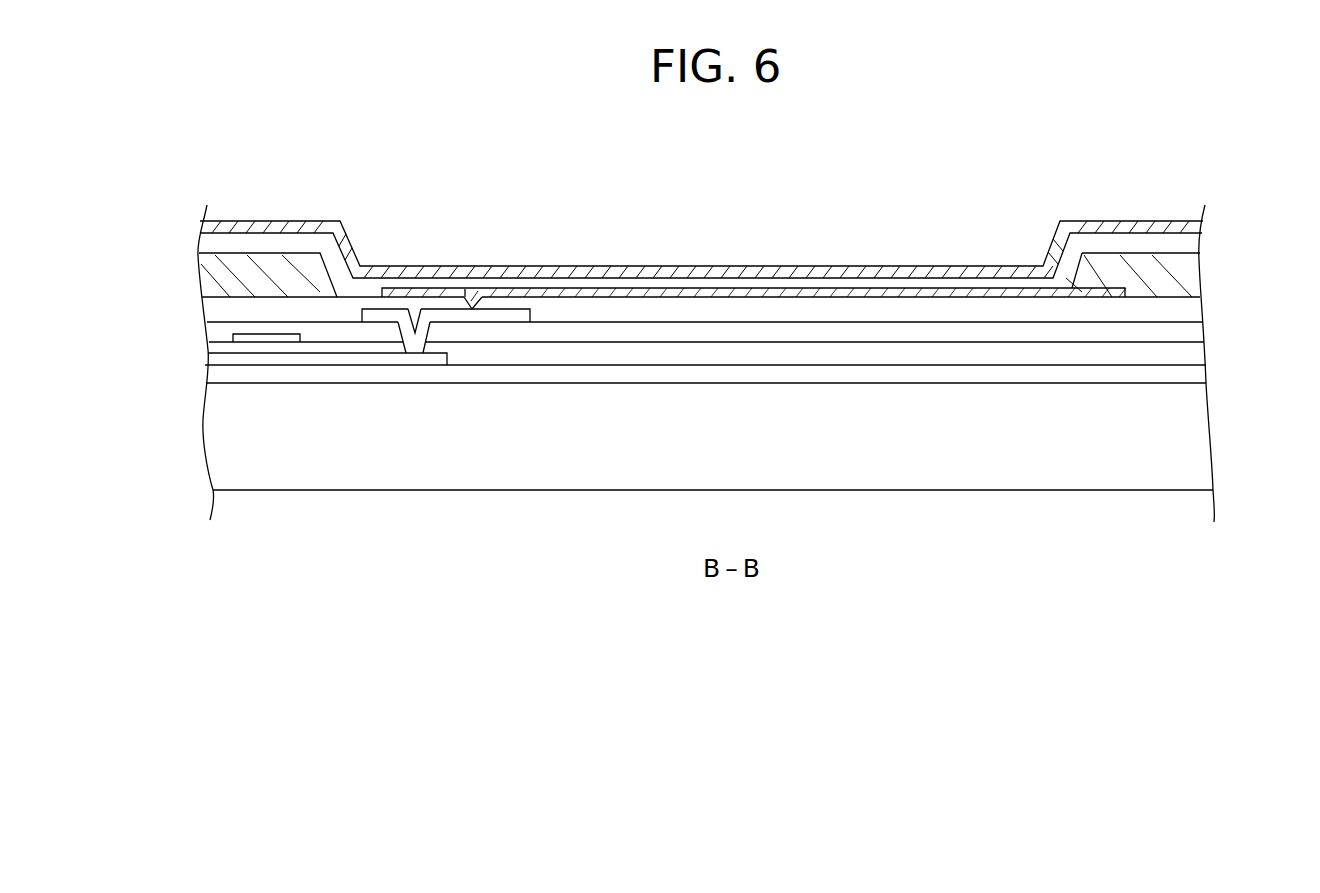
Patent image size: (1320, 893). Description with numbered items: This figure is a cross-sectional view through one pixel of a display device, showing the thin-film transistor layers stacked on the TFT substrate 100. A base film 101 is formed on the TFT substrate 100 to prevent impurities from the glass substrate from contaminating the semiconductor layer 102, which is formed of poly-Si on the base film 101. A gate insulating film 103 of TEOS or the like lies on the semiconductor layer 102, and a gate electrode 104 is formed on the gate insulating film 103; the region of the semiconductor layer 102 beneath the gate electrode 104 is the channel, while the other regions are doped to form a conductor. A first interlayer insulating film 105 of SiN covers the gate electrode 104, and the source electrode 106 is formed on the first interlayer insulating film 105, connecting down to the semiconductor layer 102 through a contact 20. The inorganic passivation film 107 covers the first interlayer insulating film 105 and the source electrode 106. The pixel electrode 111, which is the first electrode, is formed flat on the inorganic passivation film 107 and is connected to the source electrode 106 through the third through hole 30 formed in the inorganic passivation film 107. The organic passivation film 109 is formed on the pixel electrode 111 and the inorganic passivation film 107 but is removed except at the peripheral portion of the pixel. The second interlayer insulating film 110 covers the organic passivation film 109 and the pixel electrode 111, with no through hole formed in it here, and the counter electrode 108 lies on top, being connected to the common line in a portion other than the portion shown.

The contact hole 20 is at (413, 312).
The third through hole 30 is at (476, 300).
The TFT substrate 100 is at (1187, 443).
The base film 101 is at (1187, 377).
The semiconductor layer 102 is at (337, 361).
The gate insulating film 103 is at (1187, 355).
The gate electrode 104 is at (261, 338).
The first interlayer insulating film 105 is at (1187, 330).
The source electrode 106 is at (473, 317).
The inorganic passivation film 107 is at (1187, 312).
The counter electrode 108 is at (946, 270).
The organic passivation film 109 is at (213, 271).
The second interlayer insulating film 110 is at (840, 283).
The pixel electrode 111 is at (746, 293).